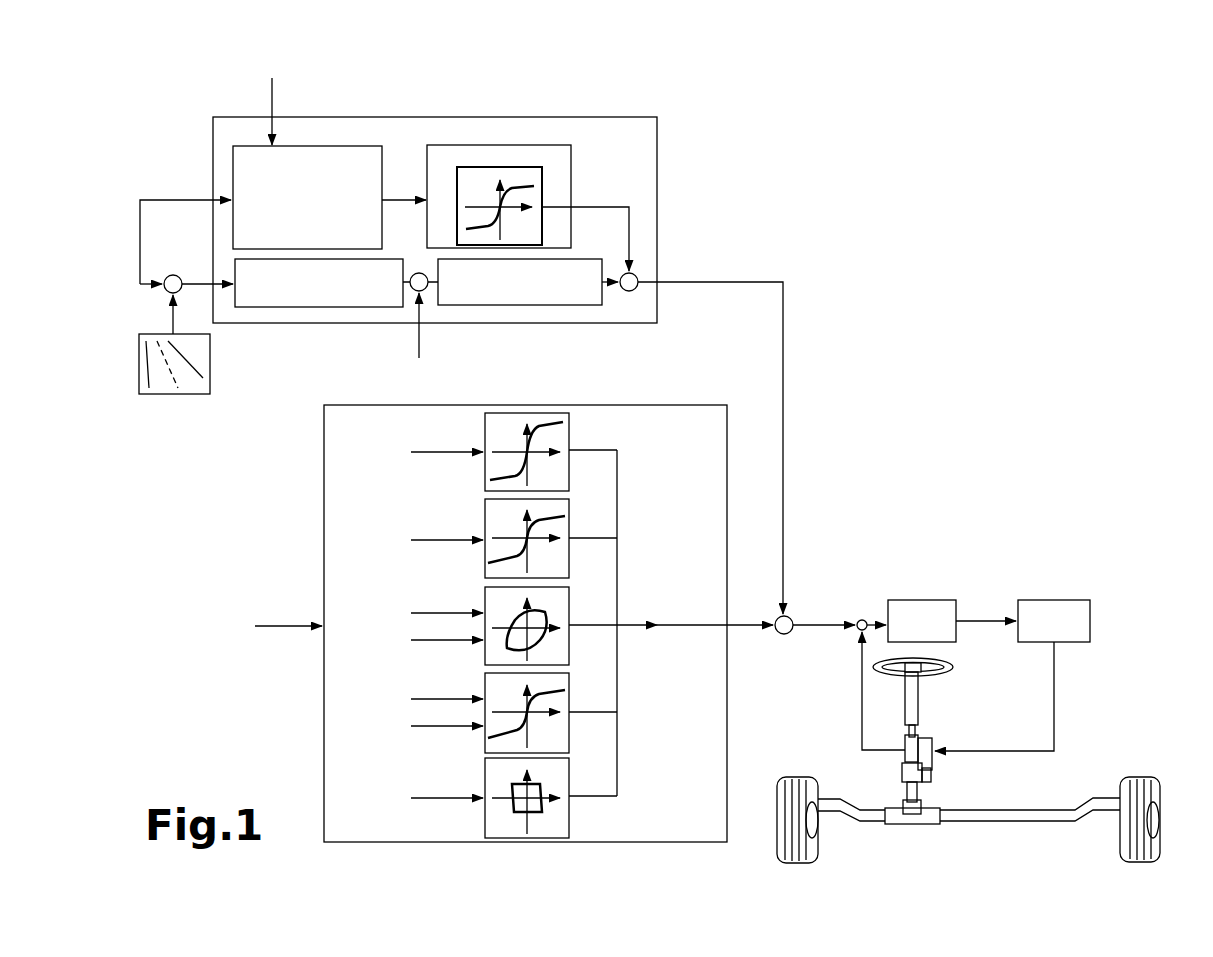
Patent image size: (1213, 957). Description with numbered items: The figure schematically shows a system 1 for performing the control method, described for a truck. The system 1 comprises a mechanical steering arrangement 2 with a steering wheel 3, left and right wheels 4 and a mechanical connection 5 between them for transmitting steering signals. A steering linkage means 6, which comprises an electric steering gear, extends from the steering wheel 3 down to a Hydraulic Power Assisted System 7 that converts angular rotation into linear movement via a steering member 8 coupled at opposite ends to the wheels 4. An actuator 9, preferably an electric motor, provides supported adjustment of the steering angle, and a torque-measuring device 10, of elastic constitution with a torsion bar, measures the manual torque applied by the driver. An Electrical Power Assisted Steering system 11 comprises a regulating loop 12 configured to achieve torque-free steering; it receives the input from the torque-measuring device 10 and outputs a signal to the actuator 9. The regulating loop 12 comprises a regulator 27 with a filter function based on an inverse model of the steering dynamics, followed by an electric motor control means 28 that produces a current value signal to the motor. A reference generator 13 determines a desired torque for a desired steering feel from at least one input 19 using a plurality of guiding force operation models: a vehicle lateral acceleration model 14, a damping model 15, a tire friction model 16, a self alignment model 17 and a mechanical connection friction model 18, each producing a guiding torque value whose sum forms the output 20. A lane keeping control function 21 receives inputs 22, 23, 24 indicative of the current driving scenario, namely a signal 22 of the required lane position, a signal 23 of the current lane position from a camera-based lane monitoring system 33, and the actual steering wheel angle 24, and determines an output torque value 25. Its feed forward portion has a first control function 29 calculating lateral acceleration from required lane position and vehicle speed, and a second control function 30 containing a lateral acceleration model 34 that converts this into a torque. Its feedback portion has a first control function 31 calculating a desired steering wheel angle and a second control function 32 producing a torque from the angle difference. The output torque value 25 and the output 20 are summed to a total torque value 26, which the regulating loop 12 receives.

The system 1 is at (955, 346).
The mechanical steering arrangement 2 is at (1064, 776).
The steering wheel 3 is at (946, 667).
The wheel 4 is at (800, 777).
The mechanical connection 5 is at (947, 793).
The steering linkage means 6 is at (927, 715).
The Hydraulic Power Assisted System (HPAS) 7 is at (906, 817).
The steering member 8 is at (987, 824).
The actuator 9 is at (933, 745).
The torque-measuring device 10 is at (904, 748).
The Electrical Power Assisted Steering (EPAS) system 11 is at (809, 526).
The regulating loop 12 is at (1079, 690).
The reference generator 13 is at (660, 385).
The vehicle lateral acceleration model 14 is at (569, 427).
The damping model 15 is at (569, 508).
The tire friction model 16 is at (569, 596).
The self alignment model 17 is at (569, 678).
The mechanical connection friction model 18 is at (569, 812).
The input 19 is at (290, 630).
The output 20 is at (742, 632).
The lane keeping control function 21 is at (589, 80).
The signal indicative of a required lane position 22 is at (137, 284).
The signal indicative of a current lane position 23 is at (170, 316).
The input 24 is at (419, 338).
The output torque value 25 is at (712, 282).
The total torque value 26 is at (823, 625).
The regulator 27 is at (922, 600).
The electric motor control means 28 is at (1046, 600).
The first control function of the feed forward portion 29 is at (322, 146).
The second control function of the feed forward portion 30 is at (513, 145).
The first control function of the feedback portion 31 is at (310, 307).
The second control function of the feedback portion 32 is at (505, 305).
The lane monitoring system 33 is at (168, 394).
The lateral acceleration model 34 is at (542, 172).